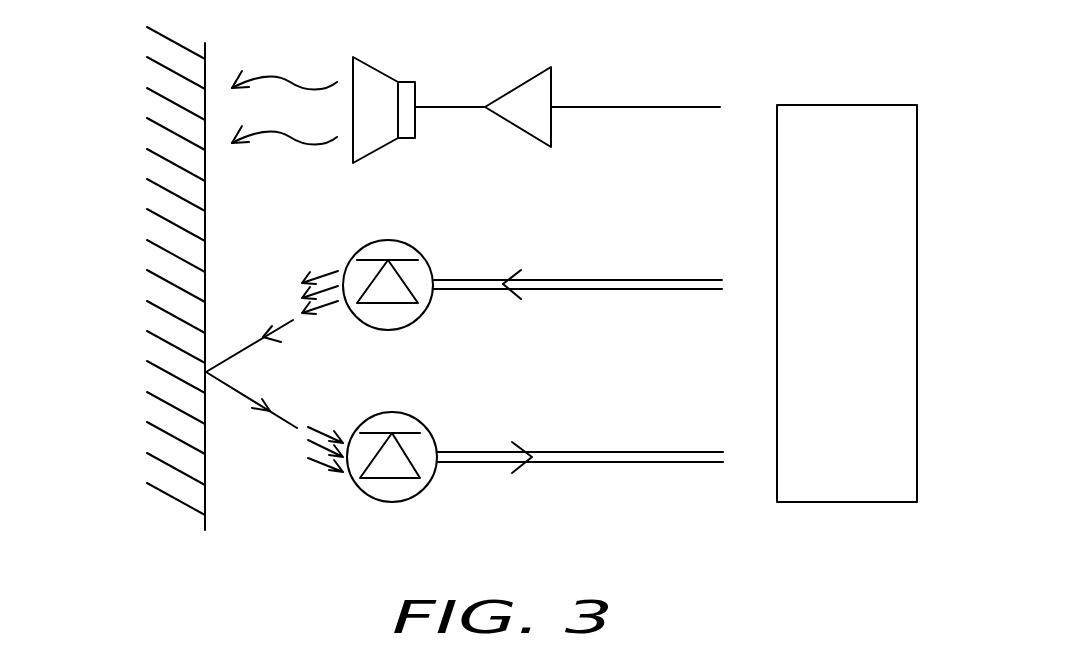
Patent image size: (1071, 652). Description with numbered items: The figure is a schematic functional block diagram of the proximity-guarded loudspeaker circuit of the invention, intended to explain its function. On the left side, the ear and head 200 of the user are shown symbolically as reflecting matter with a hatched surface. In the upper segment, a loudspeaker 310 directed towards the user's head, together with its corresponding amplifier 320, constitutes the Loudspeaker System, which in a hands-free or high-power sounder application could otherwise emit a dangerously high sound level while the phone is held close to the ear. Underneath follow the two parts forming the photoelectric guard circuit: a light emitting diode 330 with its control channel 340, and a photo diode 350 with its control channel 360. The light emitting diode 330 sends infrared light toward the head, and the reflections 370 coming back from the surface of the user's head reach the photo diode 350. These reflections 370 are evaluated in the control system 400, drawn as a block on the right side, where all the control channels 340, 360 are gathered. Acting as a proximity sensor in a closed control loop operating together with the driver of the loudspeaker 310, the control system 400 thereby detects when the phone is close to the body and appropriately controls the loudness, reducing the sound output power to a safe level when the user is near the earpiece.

The ear and head 200 is at (206, 494).
The loudspeaker 310 is at (388, 75).
The amplifier 320 is at (524, 81).
The light emitting diode 330 is at (385, 332).
The control channel 340 is at (663, 278).
The photo diode 350 is at (388, 502).
The control channel 360 is at (662, 452).
The reflections 370 is at (235, 357).
The control system 400 is at (852, 502).